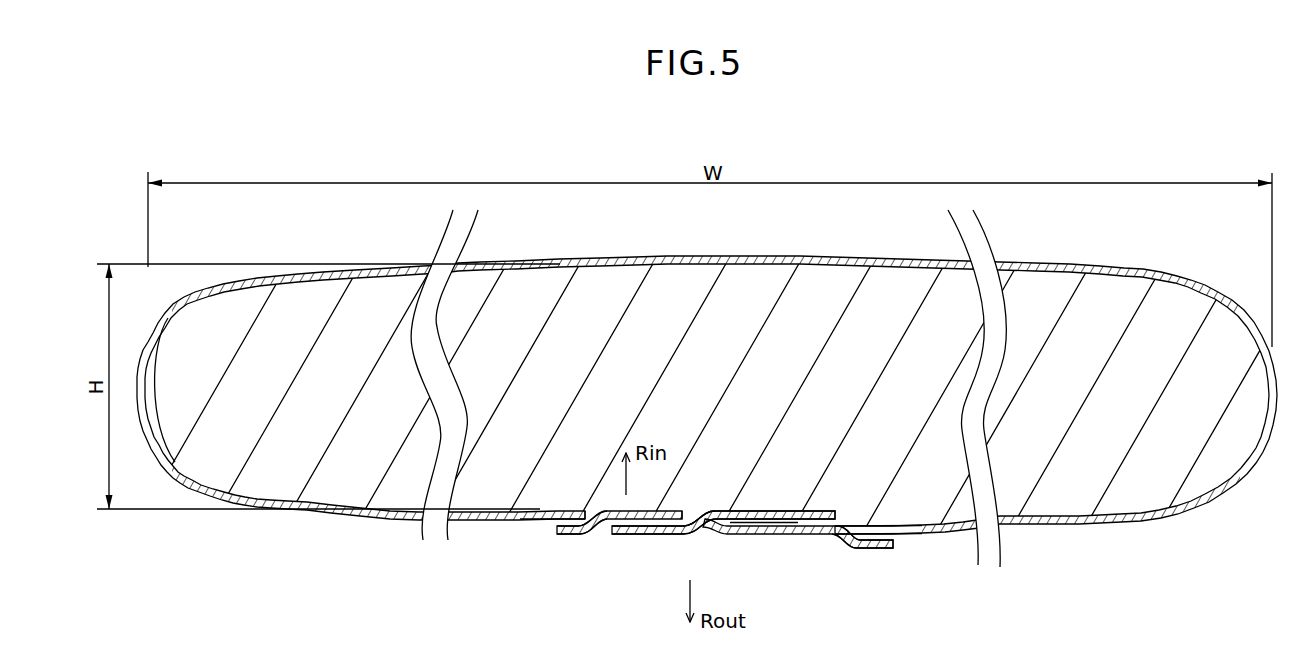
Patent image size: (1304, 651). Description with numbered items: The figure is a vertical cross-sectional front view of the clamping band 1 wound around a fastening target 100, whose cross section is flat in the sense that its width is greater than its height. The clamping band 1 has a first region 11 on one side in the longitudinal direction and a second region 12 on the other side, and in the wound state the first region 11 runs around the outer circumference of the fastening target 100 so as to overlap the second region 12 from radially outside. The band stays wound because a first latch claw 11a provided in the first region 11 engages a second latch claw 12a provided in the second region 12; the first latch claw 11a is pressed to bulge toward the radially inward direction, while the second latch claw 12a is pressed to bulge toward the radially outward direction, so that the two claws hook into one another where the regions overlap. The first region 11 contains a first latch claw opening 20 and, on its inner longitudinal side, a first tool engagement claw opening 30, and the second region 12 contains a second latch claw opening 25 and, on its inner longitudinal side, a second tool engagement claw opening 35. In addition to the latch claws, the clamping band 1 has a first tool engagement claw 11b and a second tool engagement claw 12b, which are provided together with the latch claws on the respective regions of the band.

The clamping band 1 is at (853, 242).
The fastening target 100 is at (1115, 395).
The first region 11 is at (788, 550).
The first latch claw 11a is at (697, 532).
The first tool engagement claw 11b is at (866, 550).
The second region 12 is at (652, 508).
The second latch claw 12a is at (750, 508).
The second tool engagement claw 12b is at (577, 512).
The first latch claw opening 20 is at (752, 535).
The second latch claw opening 25 is at (695, 508).
The first tool engagement claw opening 30 is at (907, 548).
The second tool engagement claw opening 35 is at (540, 508).